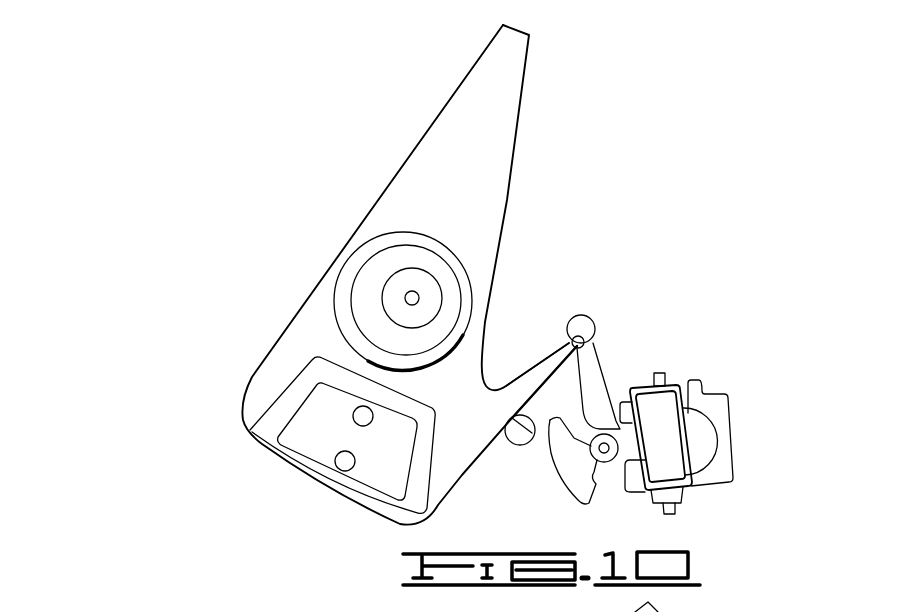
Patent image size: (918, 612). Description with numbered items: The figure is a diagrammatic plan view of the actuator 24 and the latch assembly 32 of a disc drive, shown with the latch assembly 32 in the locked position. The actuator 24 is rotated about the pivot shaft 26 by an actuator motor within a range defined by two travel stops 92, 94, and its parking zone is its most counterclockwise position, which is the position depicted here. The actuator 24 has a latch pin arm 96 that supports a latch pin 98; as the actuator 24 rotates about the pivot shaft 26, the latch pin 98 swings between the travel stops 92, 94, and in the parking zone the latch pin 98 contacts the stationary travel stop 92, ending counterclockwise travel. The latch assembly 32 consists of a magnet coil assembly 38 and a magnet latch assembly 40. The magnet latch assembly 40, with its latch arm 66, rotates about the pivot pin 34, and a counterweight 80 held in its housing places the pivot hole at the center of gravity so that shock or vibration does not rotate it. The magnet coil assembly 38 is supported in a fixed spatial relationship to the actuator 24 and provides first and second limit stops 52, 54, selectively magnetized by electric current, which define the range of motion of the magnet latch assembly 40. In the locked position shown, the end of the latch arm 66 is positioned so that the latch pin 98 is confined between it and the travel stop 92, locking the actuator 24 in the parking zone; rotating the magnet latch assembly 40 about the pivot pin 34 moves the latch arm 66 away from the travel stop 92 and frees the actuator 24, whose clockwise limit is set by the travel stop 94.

The actuator 24 is at (423, 177).
The pivot shaft 26 is at (409, 297).
The latch assembly 32 is at (734, 403).
The pivot pin 34 is at (604, 453).
The magnet coil assembly 38 is at (681, 371).
The magnet latch assembly 40 is at (692, 440).
The first limit stop 52 is at (676, 511).
The second limit stop 54 is at (661, 372).
The latch arm 66 is at (596, 380).
The counterweight 80 is at (574, 482).
The travel stop 92 is at (590, 325).
The travel stop 94 is at (523, 442).
The latch pin arm 96 is at (542, 370).
The latch pin 98 is at (581, 339).